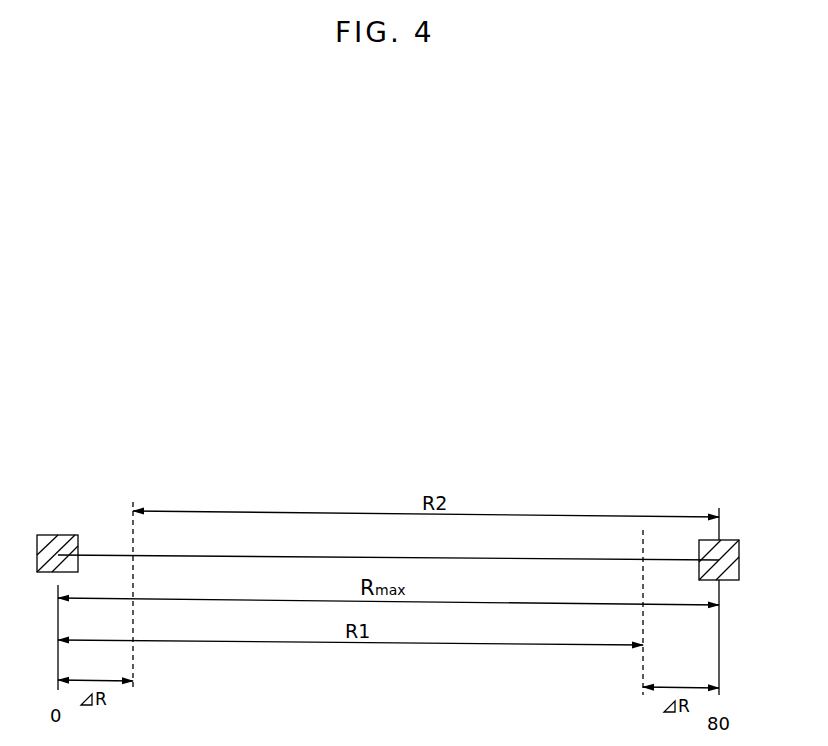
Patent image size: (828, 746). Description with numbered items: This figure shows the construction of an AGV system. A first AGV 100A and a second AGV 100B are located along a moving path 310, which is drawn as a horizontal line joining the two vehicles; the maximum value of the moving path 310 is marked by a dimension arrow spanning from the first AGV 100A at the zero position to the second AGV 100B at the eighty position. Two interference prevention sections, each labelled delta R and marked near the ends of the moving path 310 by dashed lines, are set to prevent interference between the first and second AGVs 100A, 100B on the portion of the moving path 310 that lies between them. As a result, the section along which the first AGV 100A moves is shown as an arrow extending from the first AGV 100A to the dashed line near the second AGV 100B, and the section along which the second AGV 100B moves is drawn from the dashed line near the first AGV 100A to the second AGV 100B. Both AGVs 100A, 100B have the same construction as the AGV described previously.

The first AGV 100A is at (44, 535).
The second AGV 100B is at (728, 540).
The moving path 310 is at (517, 558).